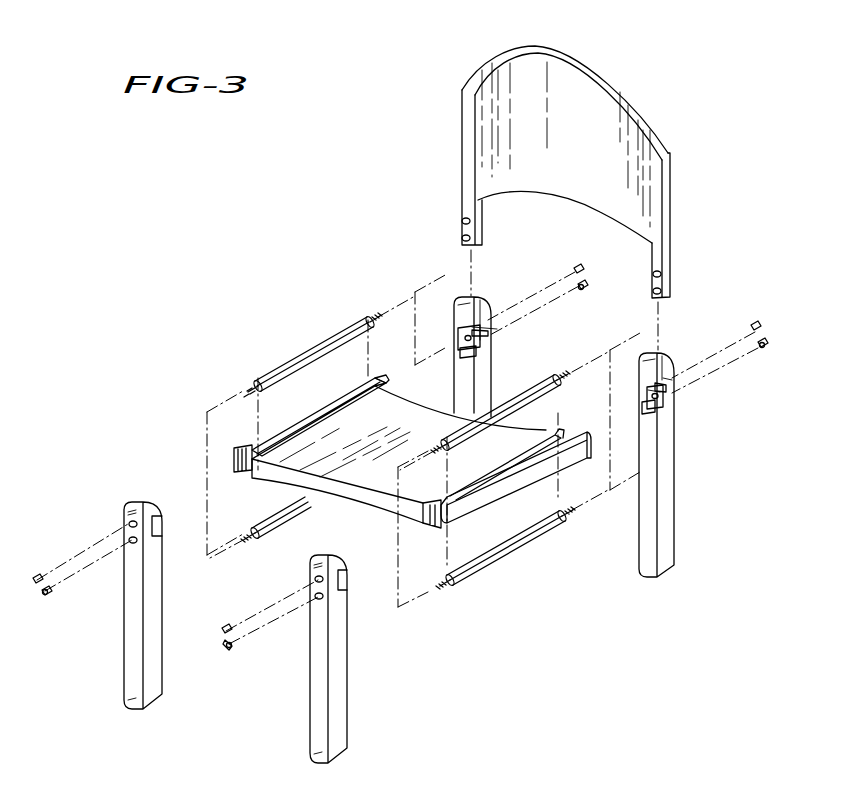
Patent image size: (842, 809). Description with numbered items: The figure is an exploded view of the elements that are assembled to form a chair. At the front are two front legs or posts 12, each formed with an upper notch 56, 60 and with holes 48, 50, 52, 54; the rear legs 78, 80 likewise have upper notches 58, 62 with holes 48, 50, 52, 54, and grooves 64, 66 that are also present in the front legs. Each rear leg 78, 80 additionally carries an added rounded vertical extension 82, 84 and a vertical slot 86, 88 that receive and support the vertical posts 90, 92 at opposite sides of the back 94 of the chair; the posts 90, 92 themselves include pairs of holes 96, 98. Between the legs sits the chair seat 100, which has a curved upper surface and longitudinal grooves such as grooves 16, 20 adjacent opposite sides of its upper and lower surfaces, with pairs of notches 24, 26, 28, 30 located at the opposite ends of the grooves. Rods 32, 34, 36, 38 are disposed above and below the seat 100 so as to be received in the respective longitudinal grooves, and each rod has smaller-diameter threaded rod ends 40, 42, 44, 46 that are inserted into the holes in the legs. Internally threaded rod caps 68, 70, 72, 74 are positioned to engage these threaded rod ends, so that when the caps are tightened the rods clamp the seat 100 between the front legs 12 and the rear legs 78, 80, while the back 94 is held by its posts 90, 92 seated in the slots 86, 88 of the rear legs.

The front legs or posts 12 is at (312, 738).
The longitudinal groove 16 is at (498, 473).
The longitudinal groove 20 is at (330, 407).
The notch 24 is at (573, 428).
The notch 26 is at (428, 520).
The notch 28 is at (380, 373).
The notch 30 is at (250, 470).
The rod 32 is at (463, 423).
The rod 34 is at (513, 548).
The rod 36 is at (313, 343).
The rod 38 is at (275, 523).
The threaded rod end 40 is at (435, 445).
The threaded rod end 42 is at (572, 517).
The threaded rod end 44 is at (375, 313).
The threaded rod end 46 is at (250, 538).
The hole 48 is at (670, 380).
The hole 50 is at (648, 393).
The hole 52 is at (463, 340).
The hole 54 is at (478, 342).
The upper notch 56 is at (347, 578).
The upper notch 58 is at (667, 400).
The upper notch 60 is at (162, 522).
The upper notch 62 is at (465, 338).
The groove 64 is at (473, 328).
The groove 66 is at (462, 357).
The internally threaded rod cap 68 is at (753, 327).
The internally threaded rod cap 70 is at (764, 347).
The internally threaded rod cap 72 is at (573, 268).
The internally threaded rod cap 74 is at (583, 283).
The rear leg 78 is at (677, 462).
The rear leg 80 is at (492, 368).
The rounded vertical extension 82 is at (650, 356).
The rounded vertical extension 84 is at (463, 317).
The vertical slot 86 is at (673, 373).
The vertical slot 88 is at (482, 315).
The vertical post 90 is at (668, 247).
The vertical post 92 is at (483, 221).
The back 94 is at (568, 58).
The holes 96 is at (652, 292).
The holes 98 is at (461, 236).
The chair seat 100 is at (377, 493).